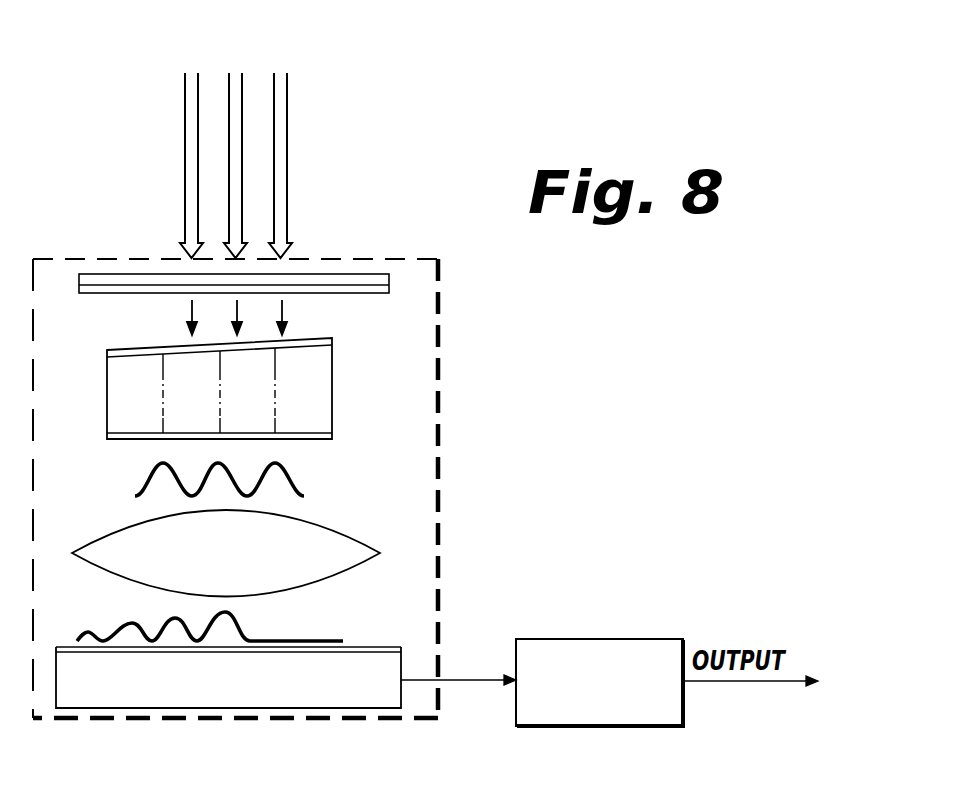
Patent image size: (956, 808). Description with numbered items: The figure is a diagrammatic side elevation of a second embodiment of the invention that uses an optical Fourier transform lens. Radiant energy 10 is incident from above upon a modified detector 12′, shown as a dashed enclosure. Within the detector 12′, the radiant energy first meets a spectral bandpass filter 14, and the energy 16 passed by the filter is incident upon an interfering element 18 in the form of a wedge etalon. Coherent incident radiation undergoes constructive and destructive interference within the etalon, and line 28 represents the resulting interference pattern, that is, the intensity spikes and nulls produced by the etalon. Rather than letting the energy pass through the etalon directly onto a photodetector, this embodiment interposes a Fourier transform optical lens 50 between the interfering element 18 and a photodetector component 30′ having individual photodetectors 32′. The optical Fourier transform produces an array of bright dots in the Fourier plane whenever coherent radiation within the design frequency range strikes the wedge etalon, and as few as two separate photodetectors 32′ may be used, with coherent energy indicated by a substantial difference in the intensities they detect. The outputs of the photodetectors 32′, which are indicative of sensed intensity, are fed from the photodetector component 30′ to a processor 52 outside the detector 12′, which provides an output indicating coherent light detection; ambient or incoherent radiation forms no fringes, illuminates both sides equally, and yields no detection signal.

The radiant energy 10 is at (207, 61).
The modified detector 12′ is at (438, 259).
The spectral bandpass filter 14 is at (118, 274).
The energy passed by the filter 16 is at (192, 313).
The interfering element 18 is at (107, 386).
The interference pattern 28 is at (142, 486).
The Fourier transform optical lens 50 is at (340, 531).
The individual photodetectors 32′ is at (373, 648).
The photodetector component 30′ is at (401, 658).
The processor 52 is at (606, 639).